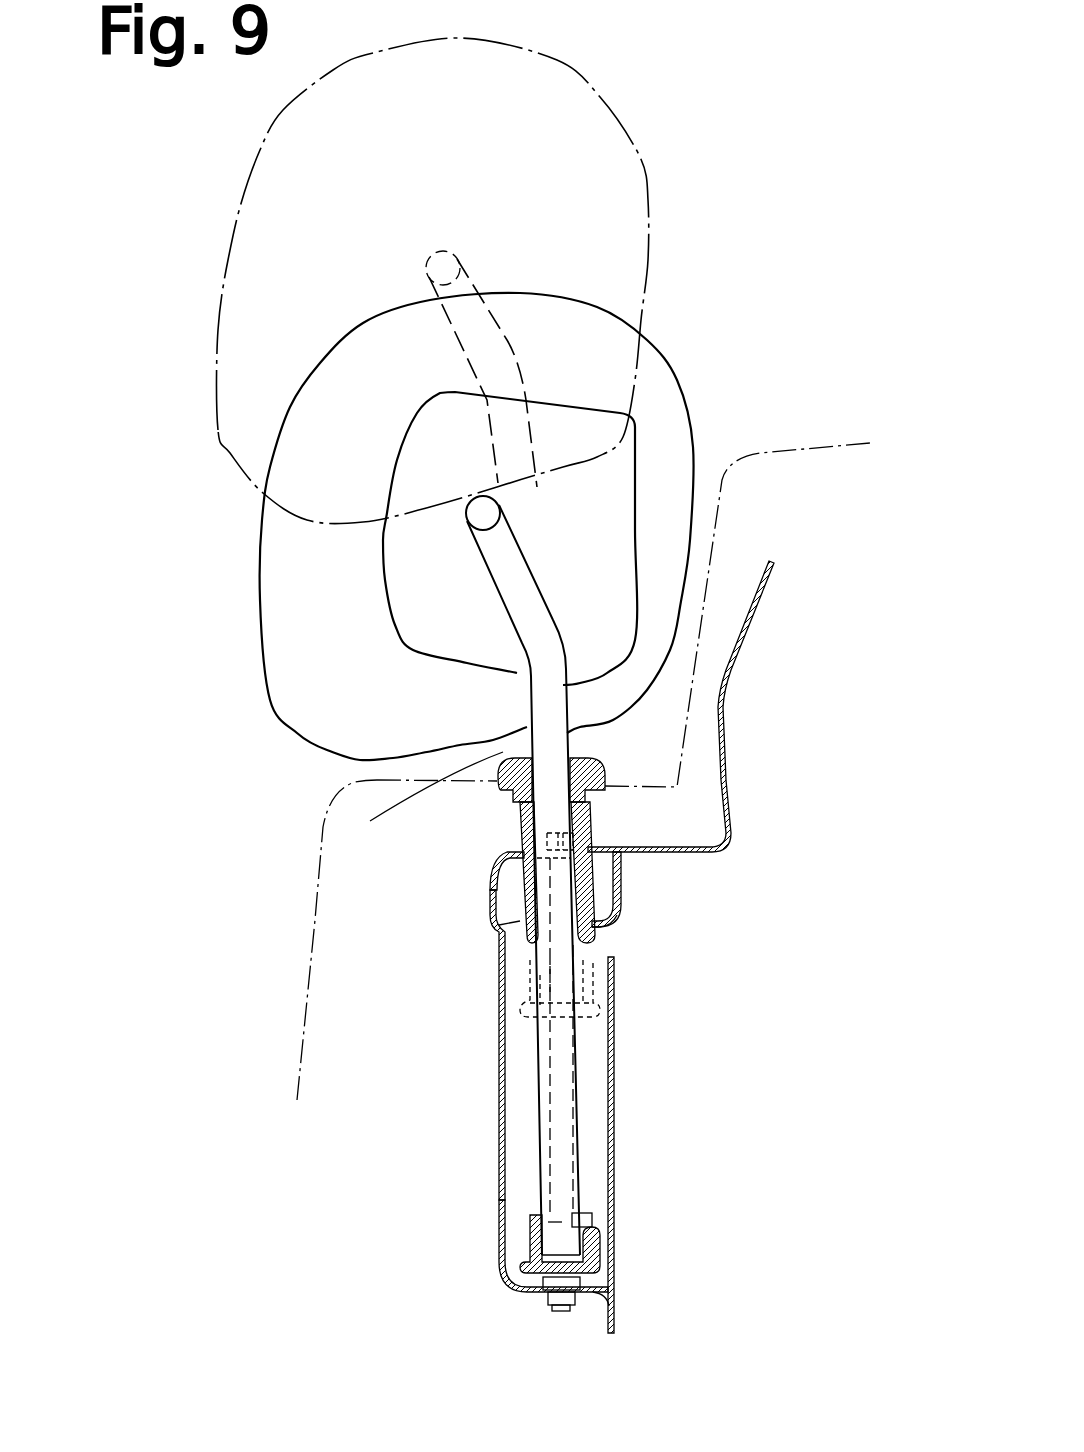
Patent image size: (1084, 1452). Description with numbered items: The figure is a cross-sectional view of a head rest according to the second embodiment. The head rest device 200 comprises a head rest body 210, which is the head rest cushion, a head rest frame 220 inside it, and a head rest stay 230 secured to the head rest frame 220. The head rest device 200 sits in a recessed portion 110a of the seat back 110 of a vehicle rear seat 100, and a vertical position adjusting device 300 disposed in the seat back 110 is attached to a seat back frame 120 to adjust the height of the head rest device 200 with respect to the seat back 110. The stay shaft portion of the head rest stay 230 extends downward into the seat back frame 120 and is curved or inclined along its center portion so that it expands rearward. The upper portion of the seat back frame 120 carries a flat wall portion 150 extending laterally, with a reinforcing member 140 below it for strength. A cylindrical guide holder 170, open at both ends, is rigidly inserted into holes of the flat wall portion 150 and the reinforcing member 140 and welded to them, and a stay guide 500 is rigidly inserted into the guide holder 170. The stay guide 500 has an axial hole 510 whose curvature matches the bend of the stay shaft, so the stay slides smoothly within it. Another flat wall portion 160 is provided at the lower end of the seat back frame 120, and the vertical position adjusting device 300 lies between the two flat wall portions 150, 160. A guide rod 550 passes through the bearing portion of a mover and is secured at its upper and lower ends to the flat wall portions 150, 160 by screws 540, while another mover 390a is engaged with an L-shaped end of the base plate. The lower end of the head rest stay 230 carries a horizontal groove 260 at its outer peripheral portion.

The vehicle rear seat 100 is at (262, 850).
The seat back 110 is at (290, 990).
The recessed portion 110a is at (412, 772).
The seat back frame 120 is at (493, 1015).
The reinforcing member 140 is at (620, 890).
The flat wall portion 150 is at (667, 855).
The flat wall portion 160 is at (497, 1268).
The guide holder 170 is at (600, 907).
The head rest device 200 is at (240, 551).
The head rest body 210 is at (680, 398).
The head rest frame 220 is at (385, 588).
The head rest stay 230 is at (503, 602).
The horizontal groove 260 is at (593, 1217).
The vertical position adjusting device 300 is at (598, 1072).
The mover 390a is at (600, 1247).
The stay guide 500 is at (503, 790).
The axial hole 510 is at (370, 821).
The screw 540 is at (518, 823).
The guide rod 550 is at (580, 1125).